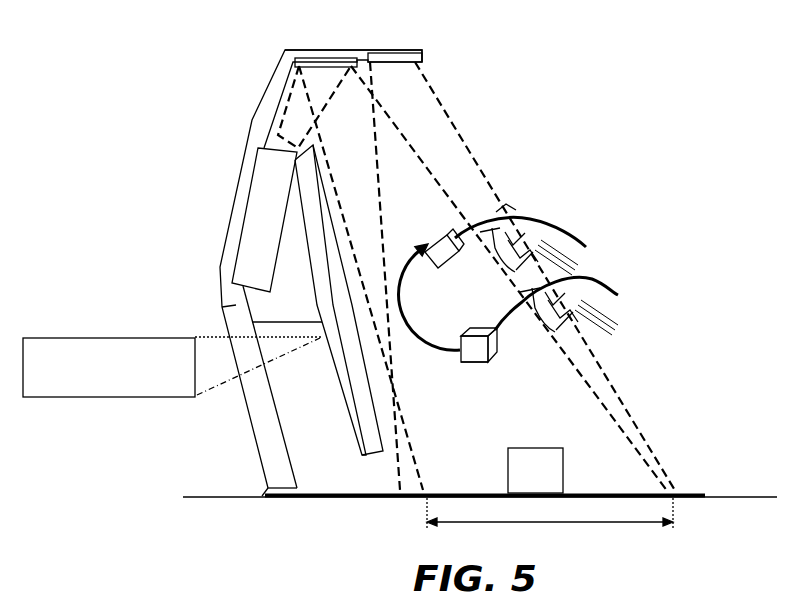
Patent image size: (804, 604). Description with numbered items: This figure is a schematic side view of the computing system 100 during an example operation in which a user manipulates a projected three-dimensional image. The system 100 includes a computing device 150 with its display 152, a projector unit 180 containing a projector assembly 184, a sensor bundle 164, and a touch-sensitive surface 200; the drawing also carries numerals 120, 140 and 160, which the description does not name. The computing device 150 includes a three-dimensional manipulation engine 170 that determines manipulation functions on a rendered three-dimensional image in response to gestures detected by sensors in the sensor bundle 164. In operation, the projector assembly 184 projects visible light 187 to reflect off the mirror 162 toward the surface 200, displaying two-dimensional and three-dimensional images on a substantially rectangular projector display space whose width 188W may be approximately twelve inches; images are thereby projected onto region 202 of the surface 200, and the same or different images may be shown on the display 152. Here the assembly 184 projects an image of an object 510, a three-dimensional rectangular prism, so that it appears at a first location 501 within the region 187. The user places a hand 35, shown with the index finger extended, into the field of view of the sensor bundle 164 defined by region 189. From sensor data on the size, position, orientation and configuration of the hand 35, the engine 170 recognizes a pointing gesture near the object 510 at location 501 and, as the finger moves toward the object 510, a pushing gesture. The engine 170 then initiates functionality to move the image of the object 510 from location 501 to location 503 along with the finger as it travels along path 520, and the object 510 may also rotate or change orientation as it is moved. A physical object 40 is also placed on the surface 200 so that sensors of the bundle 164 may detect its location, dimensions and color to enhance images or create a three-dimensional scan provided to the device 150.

The computing system 100 is at (590, 158).
The base 120 is at (293, 500).
The support frame 140 is at (218, 185).
The computing device 150 is at (332, 380).
The display 152 is at (370, 347).
The top housing 160 is at (285, 43).
The mirror 162 is at (342, 49).
The sensor bundle 164 is at (393, 48).
The 3D manipulation engine 170 is at (118, 398).
The projector unit 180 is at (238, 307).
The projector assembly 184 is at (252, 163).
The visible light 187 is at (387, 110).
The region 189 is at (428, 82).
The touch-sensitive surface 200 is at (703, 498).
The region 202 is at (452, 493).
The width 188W is at (550, 524).
The hand 35 is at (550, 221).
The object 40 is at (565, 456).
The first location 501 is at (502, 358).
The location 503 is at (500, 208).
The object 510 is at (450, 214).
The path 520 is at (413, 330).